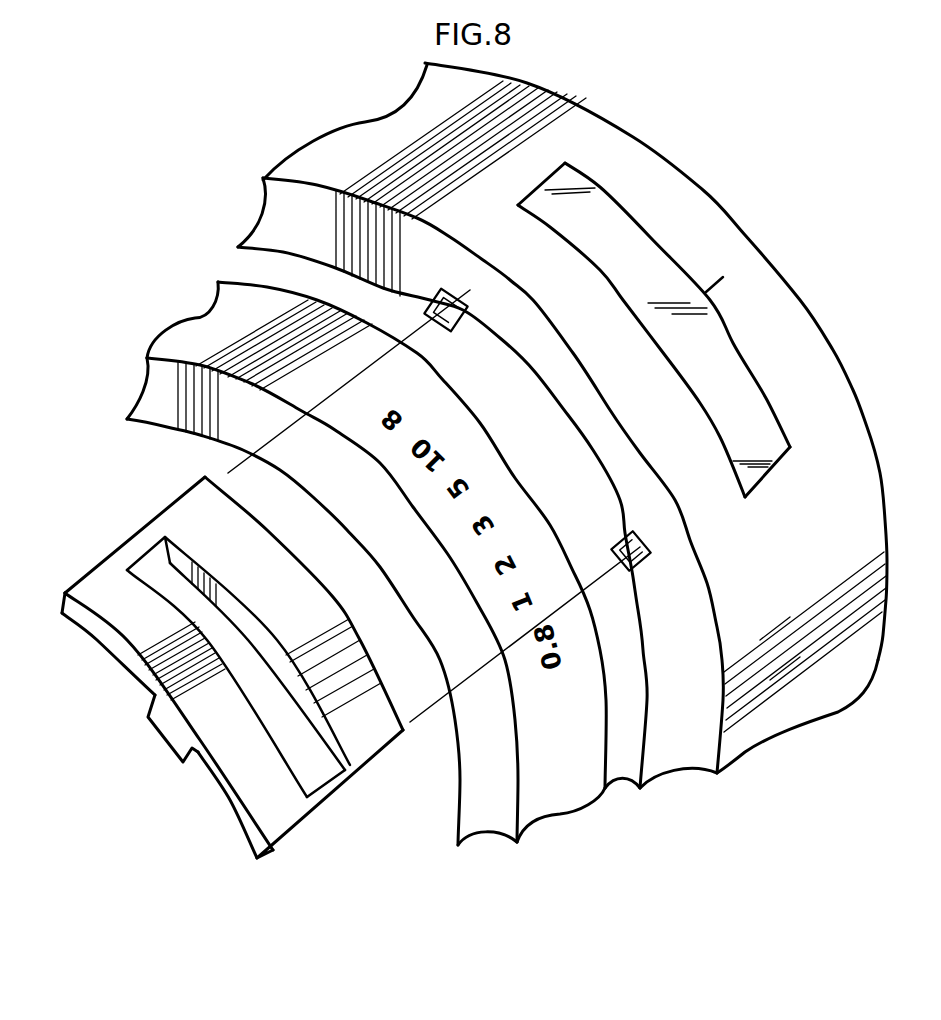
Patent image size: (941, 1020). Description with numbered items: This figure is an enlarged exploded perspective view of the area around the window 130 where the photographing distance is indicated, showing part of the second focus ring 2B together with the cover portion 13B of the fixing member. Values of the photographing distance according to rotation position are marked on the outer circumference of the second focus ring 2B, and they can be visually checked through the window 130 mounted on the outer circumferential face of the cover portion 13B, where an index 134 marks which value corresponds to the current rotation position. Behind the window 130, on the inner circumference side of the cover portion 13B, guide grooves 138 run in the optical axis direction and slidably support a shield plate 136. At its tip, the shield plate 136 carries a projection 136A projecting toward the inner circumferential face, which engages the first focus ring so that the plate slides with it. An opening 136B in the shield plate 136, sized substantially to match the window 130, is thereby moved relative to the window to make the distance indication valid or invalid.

The cover portion 13B is at (403, 142).
The second focus ring 2B is at (207, 342).
The window 130 is at (613, 227).
The index 134 is at (712, 290).
The shield plate 136 is at (101, 582).
The projection 136A is at (173, 735).
The opening 136B is at (152, 566).
The guide grooves 138 is at (465, 308).